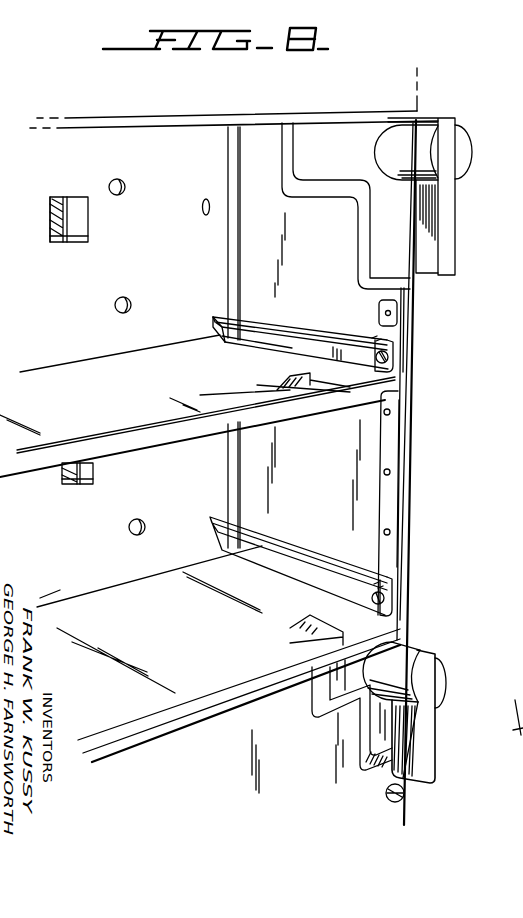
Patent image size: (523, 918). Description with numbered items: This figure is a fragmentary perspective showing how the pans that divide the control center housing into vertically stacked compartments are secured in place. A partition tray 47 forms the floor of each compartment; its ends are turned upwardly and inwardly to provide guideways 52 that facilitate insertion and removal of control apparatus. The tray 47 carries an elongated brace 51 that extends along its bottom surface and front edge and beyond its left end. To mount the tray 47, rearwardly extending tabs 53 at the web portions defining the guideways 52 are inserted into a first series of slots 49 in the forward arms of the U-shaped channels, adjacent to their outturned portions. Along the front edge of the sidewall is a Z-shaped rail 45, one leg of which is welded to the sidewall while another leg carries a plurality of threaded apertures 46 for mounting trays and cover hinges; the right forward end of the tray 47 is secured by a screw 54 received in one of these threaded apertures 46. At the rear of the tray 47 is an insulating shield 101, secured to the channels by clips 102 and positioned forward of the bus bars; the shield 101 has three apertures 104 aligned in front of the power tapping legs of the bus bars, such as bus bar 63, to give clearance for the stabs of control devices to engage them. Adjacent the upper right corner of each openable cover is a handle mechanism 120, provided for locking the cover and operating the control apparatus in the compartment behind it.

The Z-shaped rail 45 is at (399, 330).
The threaded apertures 46 is at (389, 531).
The partition tray 47 is at (115, 409).
The first series of slots 49 is at (203, 204).
The elongated brace 51 is at (133, 449).
The guideways 52 is at (300, 340).
The rearwardly extending tabs 53 is at (213, 321).
The screw 54 is at (392, 354).
The bus bar 63 is at (62, 221).
The insulating shield 101 is at (73, 314).
The clips 102 is at (123, 181).
The apertures 104 is at (80, 222).
The handle mechanism 120 is at (455, 248).